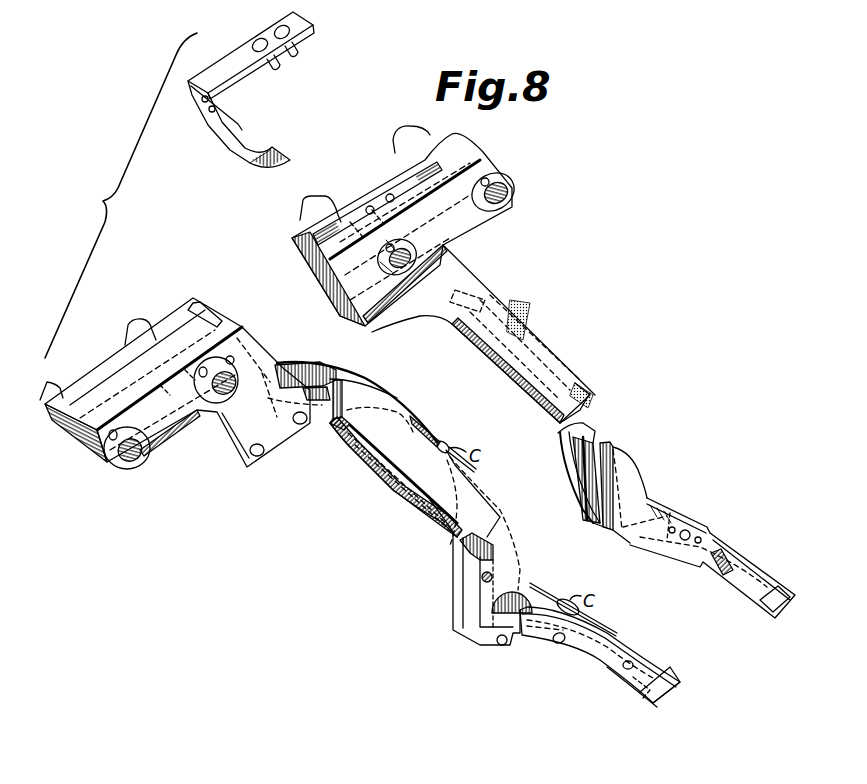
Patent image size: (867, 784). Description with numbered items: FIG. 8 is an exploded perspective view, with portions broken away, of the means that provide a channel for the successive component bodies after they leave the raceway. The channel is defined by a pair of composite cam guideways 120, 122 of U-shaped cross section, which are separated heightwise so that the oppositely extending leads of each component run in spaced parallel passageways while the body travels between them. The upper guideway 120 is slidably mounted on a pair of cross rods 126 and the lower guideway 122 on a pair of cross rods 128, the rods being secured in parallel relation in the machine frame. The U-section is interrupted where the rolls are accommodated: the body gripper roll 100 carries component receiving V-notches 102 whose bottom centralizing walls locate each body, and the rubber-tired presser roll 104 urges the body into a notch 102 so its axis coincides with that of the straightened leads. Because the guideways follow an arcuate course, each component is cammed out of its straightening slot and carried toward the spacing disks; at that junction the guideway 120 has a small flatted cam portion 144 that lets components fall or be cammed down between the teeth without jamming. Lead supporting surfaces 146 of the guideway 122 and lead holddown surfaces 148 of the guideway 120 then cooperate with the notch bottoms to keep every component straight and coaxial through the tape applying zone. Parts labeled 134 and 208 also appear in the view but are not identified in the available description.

The body gripper roll 100 is at (396, 496).
The component receiving V-notches 102 is at (438, 443).
The rubber-tired presser roll 104 is at (520, 297).
The composite cam guideway 120 is at (627, 448).
The composite cam guideway 122 is at (480, 493).
The cross rods 126 is at (397, 153).
The cross rods 128 is at (123, 343).
The angle bracket 134 is at (243, 134).
The flatted cam portion 144 is at (614, 534).
The lead supporting surfaces 146 is at (513, 590).
The lead holddown surfaces 148 is at (636, 545).
The slot 208 is at (714, 566).